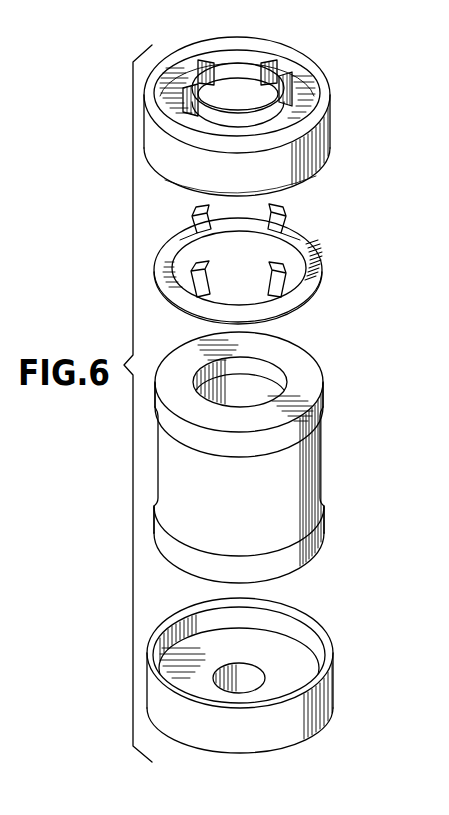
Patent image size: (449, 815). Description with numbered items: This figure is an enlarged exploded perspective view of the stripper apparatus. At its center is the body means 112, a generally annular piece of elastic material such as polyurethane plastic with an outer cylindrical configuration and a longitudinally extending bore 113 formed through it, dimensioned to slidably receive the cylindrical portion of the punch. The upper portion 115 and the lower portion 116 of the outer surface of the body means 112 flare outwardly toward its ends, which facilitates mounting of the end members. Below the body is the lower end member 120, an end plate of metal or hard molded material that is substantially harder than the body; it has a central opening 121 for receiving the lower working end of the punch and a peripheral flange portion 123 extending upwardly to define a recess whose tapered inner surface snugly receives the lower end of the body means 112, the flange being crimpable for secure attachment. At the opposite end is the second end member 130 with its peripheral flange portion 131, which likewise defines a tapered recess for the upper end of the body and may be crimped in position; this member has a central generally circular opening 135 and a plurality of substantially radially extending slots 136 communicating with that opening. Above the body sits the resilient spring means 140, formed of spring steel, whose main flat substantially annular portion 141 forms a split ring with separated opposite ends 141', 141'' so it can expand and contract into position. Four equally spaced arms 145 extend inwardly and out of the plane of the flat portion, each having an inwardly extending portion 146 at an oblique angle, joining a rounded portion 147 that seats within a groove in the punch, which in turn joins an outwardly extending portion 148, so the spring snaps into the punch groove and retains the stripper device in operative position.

The body means 112 is at (312, 480).
The bore 113 is at (275, 371).
The upper portion 115 is at (325, 392).
The lower portion 116 is at (322, 528).
The lower end member 120 is at (293, 738).
The central opening 121 is at (246, 673).
The peripheral flange portion 123 is at (328, 668).
The second end member 130 is at (321, 75).
The peripheral flange portion 131 is at (323, 155).
The central opening 135 is at (244, 72).
The radially extending slots 136 is at (212, 74).
The spring means 140 is at (336, 303).
The flat annular portion 141 is at (342, 234).
The end of split ring 141' is at (344, 260).
The end of split ring 141'' is at (357, 278).
The spaced arms 145 is at (271, 209).
The inwardly extending portion 146 is at (203, 289).
The rounded portion 147 is at (208, 288).
The outwardly extending portion 148 is at (202, 273).